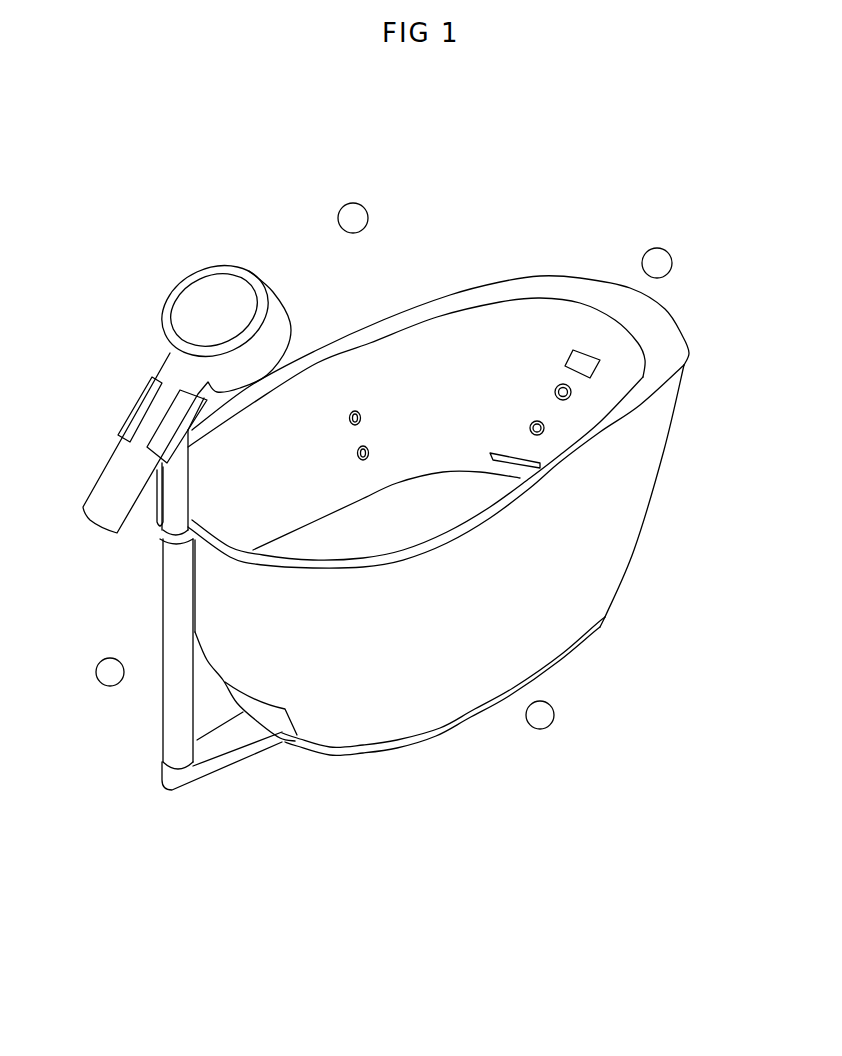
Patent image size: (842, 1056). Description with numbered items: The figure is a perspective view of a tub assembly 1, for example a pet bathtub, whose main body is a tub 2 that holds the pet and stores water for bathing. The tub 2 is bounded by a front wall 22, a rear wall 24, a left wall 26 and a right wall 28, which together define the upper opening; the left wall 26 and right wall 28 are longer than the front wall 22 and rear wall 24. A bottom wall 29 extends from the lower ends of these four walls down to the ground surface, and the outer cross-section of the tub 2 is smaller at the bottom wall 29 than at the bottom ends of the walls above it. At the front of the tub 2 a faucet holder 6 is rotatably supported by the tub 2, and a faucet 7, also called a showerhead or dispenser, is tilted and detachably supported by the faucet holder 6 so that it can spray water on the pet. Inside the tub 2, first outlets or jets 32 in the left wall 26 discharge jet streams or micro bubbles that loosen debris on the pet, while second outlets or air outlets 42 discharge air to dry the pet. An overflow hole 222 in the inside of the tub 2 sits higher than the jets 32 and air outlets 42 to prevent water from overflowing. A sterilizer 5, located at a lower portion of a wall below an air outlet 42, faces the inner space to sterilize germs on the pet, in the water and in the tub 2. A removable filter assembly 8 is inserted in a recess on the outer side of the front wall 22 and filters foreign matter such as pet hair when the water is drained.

The tub assembly 1 is at (374, 161).
The tub 2 is at (370, 767).
The sterilizer 5 is at (500, 450).
The faucet holder 6 is at (152, 613).
The faucet 7 is at (150, 340).
The filter assembly 8 is at (282, 720).
The front wall 22 is at (273, 632).
The rear wall 24 is at (684, 365).
The left wall 26 is at (320, 343).
The right wall 28 is at (560, 582).
The bottom wall 29 is at (565, 652).
The first outlet 32 is at (353, 407).
The second outlet 42 is at (555, 380).
The overflow hole 222 is at (583, 360).